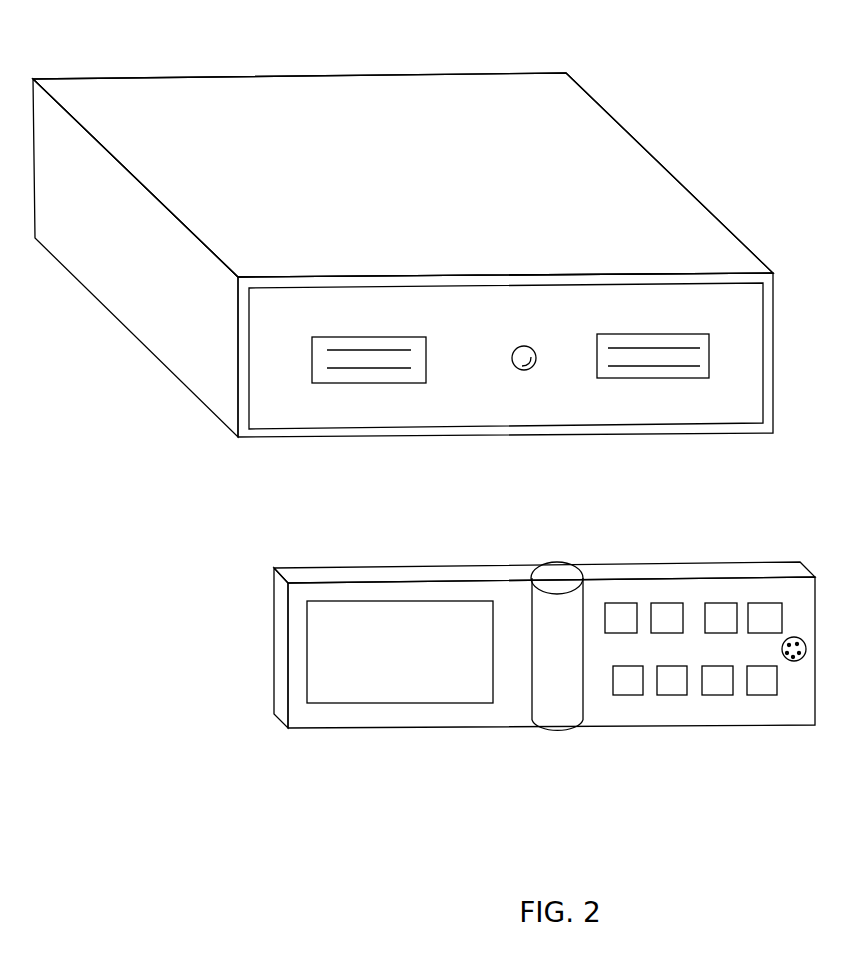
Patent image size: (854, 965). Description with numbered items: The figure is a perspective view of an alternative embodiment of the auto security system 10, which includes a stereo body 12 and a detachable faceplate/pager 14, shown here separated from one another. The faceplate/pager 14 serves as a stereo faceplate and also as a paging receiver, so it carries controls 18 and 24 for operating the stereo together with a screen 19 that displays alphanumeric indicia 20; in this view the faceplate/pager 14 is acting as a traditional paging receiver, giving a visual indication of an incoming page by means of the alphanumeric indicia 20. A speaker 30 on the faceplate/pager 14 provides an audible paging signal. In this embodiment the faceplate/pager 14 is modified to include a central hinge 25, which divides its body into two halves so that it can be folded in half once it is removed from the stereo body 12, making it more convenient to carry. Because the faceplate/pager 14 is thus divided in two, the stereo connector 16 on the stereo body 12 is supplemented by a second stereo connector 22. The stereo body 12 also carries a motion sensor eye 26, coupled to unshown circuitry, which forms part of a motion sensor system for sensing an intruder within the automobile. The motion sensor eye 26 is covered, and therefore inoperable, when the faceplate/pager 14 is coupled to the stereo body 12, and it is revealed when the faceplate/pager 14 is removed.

The auto security system 10 is at (696, 150).
The stereo body 12 is at (459, 45).
The faceplate/pager 14 is at (224, 647).
The stereo connector 16 is at (682, 334).
The controls 18 is at (768, 696).
The screen 19 is at (337, 703).
The alphanumeric indicia 20 is at (413, 683).
The second stereo connector 22 is at (312, 353).
The controls 24 is at (722, 603).
The central hinge 25 is at (561, 737).
The motion sensor eye 26 is at (518, 370).
The speaker 30 is at (793, 637).